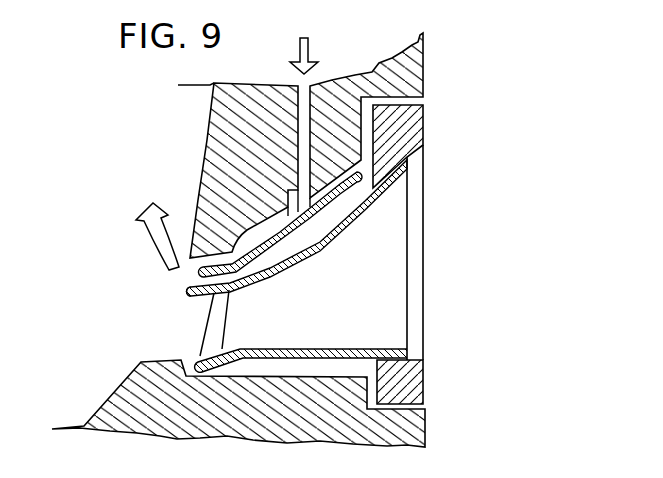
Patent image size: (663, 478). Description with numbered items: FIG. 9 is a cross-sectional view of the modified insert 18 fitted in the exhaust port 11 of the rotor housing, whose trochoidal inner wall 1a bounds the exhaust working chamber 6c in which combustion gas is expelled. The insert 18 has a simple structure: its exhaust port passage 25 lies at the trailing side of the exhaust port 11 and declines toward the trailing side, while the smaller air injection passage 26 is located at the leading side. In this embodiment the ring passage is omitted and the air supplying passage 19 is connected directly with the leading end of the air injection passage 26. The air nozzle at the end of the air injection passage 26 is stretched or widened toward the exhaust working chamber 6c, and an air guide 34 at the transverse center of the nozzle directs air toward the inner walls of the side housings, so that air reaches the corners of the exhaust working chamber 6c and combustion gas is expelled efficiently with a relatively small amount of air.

The air supplying passage 19 is at (298, 120).
The insert 18 is at (428, 164).
The air injection passage 26 is at (302, 232).
The air guide 34 is at (187, 284).
The exhaust port 11 is at (178, 334).
The exhaust port passage 25 is at (331, 334).
The inner wall 1a is at (114, 390).
The exhaust working chamber 6c is at (107, 272).